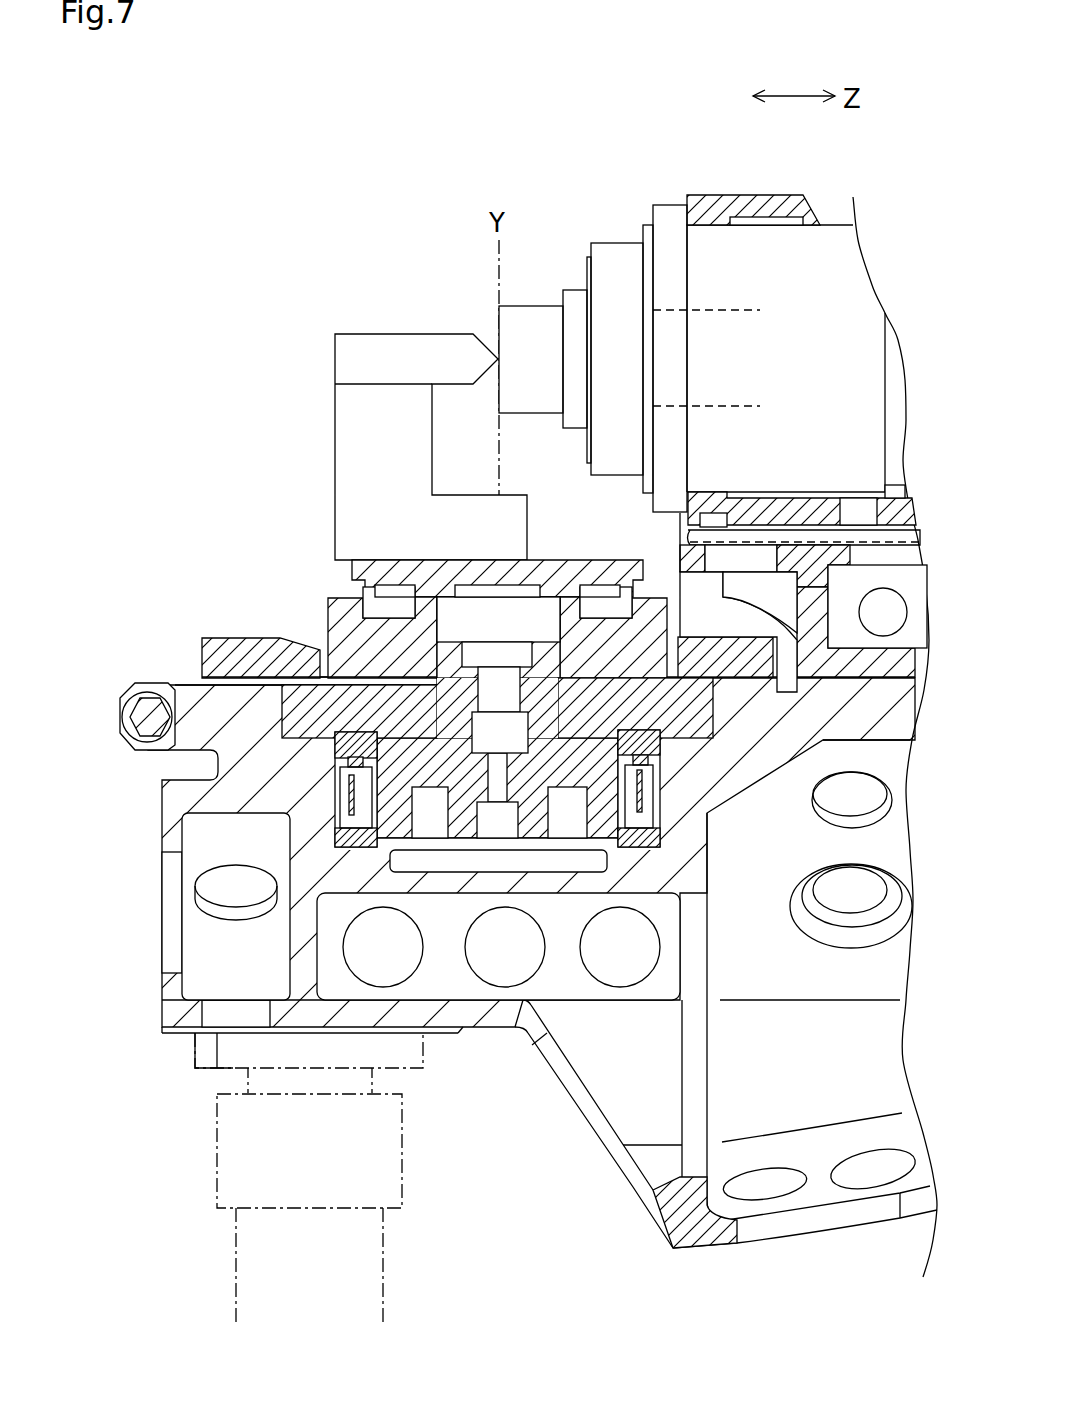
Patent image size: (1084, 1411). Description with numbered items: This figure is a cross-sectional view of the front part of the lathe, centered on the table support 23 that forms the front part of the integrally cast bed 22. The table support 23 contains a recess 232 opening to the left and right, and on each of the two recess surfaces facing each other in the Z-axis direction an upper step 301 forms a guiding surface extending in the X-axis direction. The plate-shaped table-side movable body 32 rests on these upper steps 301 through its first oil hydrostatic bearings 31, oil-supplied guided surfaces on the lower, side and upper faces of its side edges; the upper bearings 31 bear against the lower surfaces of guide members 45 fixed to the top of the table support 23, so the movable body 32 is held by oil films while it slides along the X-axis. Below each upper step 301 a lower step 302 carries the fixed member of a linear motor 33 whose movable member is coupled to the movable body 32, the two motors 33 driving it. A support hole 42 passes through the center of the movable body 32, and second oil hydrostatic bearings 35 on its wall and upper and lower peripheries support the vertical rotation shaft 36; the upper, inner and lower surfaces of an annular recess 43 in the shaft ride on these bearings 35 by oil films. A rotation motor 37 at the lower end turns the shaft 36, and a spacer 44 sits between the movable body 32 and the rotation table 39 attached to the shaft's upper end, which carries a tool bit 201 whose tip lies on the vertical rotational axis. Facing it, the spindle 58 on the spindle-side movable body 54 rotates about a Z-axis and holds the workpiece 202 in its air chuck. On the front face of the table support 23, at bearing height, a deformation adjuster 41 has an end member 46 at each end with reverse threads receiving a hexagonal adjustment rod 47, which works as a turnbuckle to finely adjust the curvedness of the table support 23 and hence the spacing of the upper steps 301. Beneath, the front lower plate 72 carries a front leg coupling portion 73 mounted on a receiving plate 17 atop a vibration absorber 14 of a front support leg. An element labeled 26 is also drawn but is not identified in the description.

The vibration absorber 14 is at (403, 1150).
The receiving plate 17 is at (195, 1048).
The bed 22 is at (660, 1234).
The table support 23 is at (217, 797).
The housing 26 is at (837, 222).
The first oil hydrostatic bearing 31 is at (307, 670).
The table-side movable body 32 is at (650, 719).
The linear motor 33 is at (333, 807).
The second oil hydrostatic bearing 35 is at (417, 675).
The rotation shaft 36 is at (520, 642).
The rotation motor 37 is at (570, 830).
The rotation table 39 is at (621, 561).
The deformation adjuster 41 is at (119, 688).
The support hole 42 is at (440, 678).
The annular recess 43 is at (498, 712).
The spacer 44 is at (668, 628).
The guide member 45 is at (202, 652).
The end member 46 is at (125, 730).
The adjustment rod 47 is at (133, 703).
The spindle-side movable body 54 is at (740, 195).
The spindle 58 is at (720, 310).
The front lower plate 72 is at (318, 1010).
The front leg coupling portion 73 is at (218, 1035).
The tool bit 201 is at (446, 334).
The workpiece 202 is at (533, 306).
The recess 232 is at (433, 862).
The upper step 301 is at (292, 734).
The lower step 302 is at (380, 850).